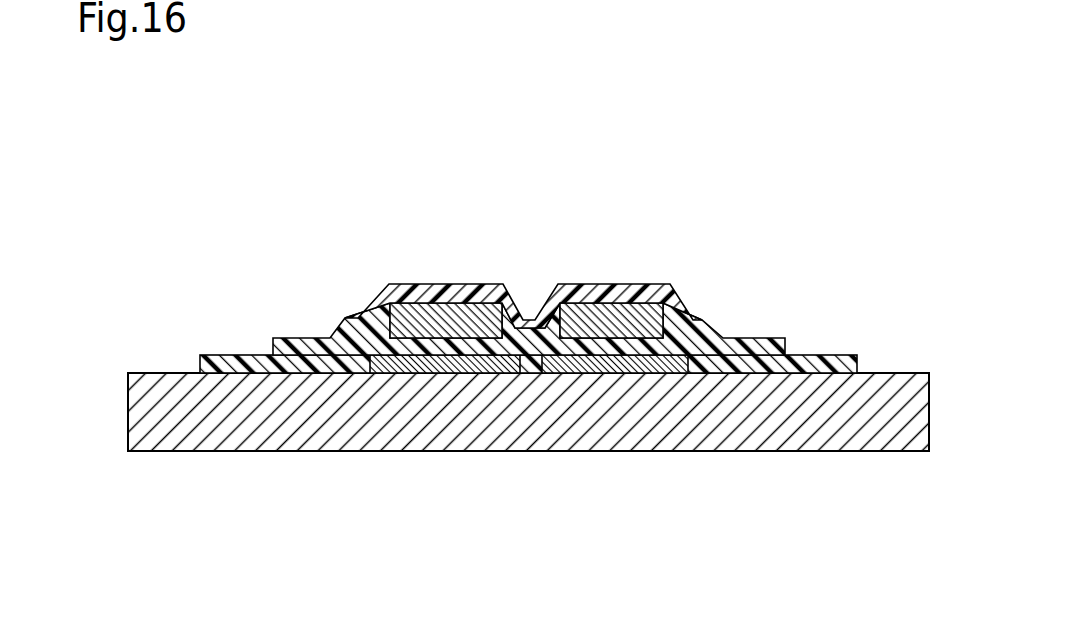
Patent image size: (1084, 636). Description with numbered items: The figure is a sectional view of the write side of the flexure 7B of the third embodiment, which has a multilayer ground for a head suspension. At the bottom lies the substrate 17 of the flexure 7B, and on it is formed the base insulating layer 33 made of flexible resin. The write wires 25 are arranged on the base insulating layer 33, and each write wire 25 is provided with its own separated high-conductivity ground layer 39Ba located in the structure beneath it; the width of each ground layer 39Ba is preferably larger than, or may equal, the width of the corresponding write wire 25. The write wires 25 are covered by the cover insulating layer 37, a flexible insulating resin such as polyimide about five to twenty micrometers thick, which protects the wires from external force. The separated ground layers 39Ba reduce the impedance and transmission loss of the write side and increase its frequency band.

The flexure 7B is at (528, 369).
The substrate 17 is at (386, 444).
The write wires 25 is at (435, 300).
The base insulating layer 33 is at (833, 357).
The cover insulating layer 37 is at (390, 292).
The ground layer 39Ba is at (485, 373).